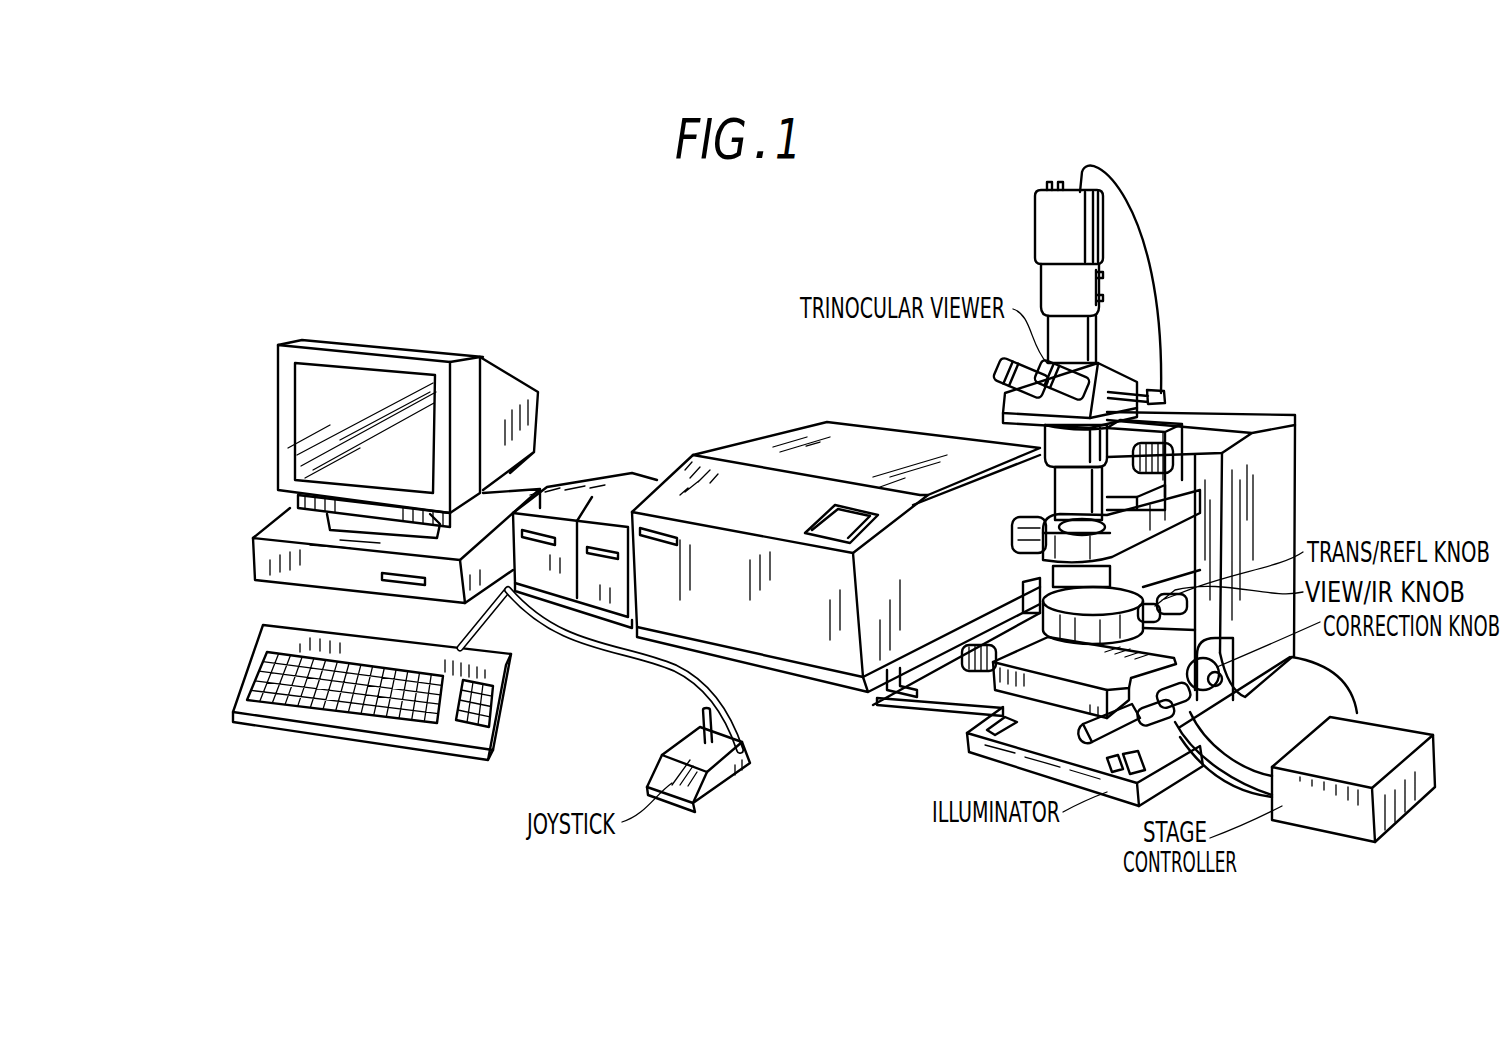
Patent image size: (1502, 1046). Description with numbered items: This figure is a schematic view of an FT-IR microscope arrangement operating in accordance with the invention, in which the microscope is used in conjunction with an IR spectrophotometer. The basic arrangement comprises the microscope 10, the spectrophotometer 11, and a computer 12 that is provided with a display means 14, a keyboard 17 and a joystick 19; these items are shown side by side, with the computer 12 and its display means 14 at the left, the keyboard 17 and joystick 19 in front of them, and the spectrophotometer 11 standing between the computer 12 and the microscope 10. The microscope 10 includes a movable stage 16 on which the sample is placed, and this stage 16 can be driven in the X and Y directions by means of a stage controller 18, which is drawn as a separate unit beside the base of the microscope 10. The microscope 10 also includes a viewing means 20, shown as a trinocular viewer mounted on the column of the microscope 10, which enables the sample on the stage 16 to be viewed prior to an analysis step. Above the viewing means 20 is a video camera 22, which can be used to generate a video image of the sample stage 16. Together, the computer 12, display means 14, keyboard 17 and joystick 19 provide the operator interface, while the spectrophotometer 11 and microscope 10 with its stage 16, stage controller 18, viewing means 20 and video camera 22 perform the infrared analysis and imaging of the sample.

The microscope 10 is at (1357, 508).
The spectrophotometer 11 is at (770, 438).
The computer 12 is at (250, 557).
The display means 14 is at (300, 405).
The movable stage 16 is at (1003, 710).
The keyboard 17 is at (247, 673).
The stage controller 18 is at (1308, 810).
The joystick 19 is at (653, 765).
The viewing means 20 is at (993, 373).
The video camera 22 is at (1035, 230).